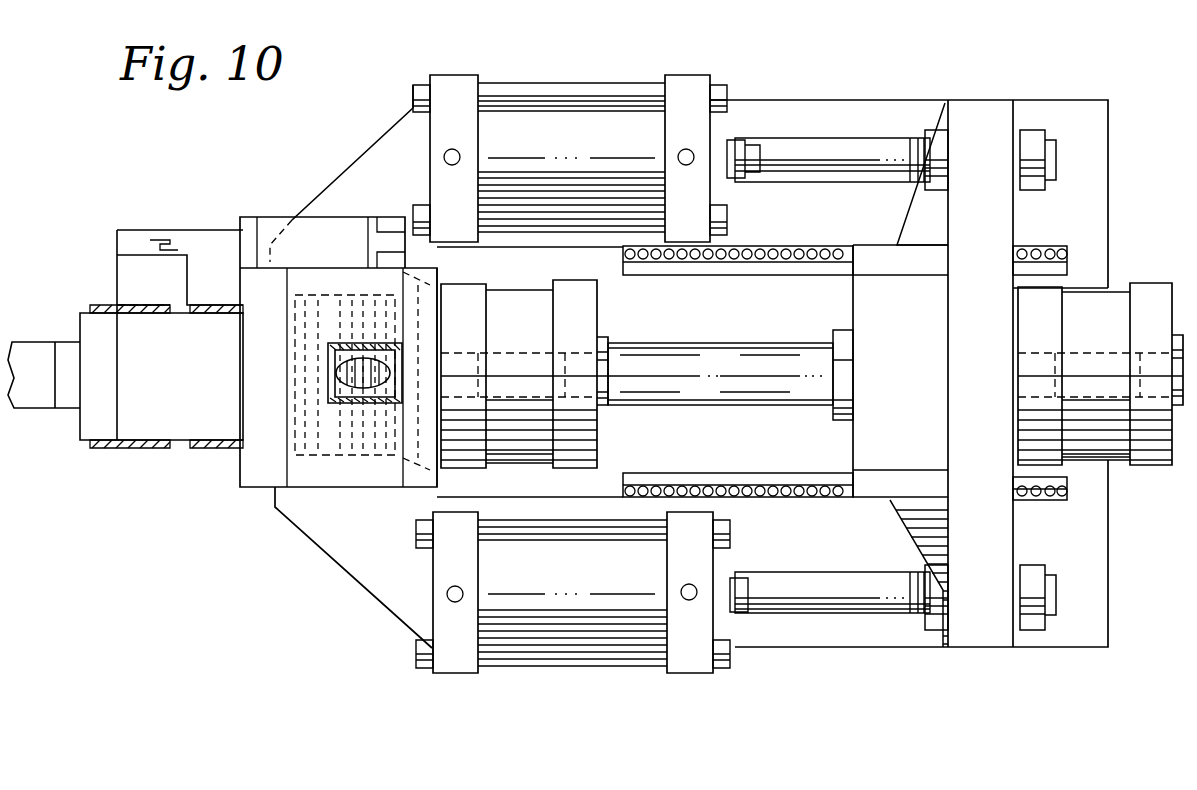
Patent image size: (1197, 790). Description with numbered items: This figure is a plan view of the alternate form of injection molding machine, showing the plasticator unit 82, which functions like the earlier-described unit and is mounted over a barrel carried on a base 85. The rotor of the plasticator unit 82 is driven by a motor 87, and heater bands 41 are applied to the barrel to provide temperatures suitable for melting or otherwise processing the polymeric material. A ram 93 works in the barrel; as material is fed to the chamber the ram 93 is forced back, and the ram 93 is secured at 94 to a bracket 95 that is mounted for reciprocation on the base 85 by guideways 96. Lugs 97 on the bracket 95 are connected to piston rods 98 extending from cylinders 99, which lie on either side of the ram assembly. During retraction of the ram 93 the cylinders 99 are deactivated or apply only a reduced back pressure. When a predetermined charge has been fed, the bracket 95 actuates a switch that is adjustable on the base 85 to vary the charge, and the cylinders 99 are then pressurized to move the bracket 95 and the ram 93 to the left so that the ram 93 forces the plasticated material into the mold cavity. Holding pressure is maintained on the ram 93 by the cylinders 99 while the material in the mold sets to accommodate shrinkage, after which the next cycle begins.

The heater bands 41 is at (200, 450).
The plasticator unit 82 is at (354, 500).
The base 85 is at (1075, 100).
The motor 87 is at (580, 320).
The ram 93 is at (677, 385).
The securement point 94 is at (833, 326).
The bracket 95 is at (867, 448).
The guideways 96 is at (762, 278).
The lugs 97 is at (1000, 212).
The piston rods 98 is at (772, 147).
The cylinders 99 is at (558, 120).